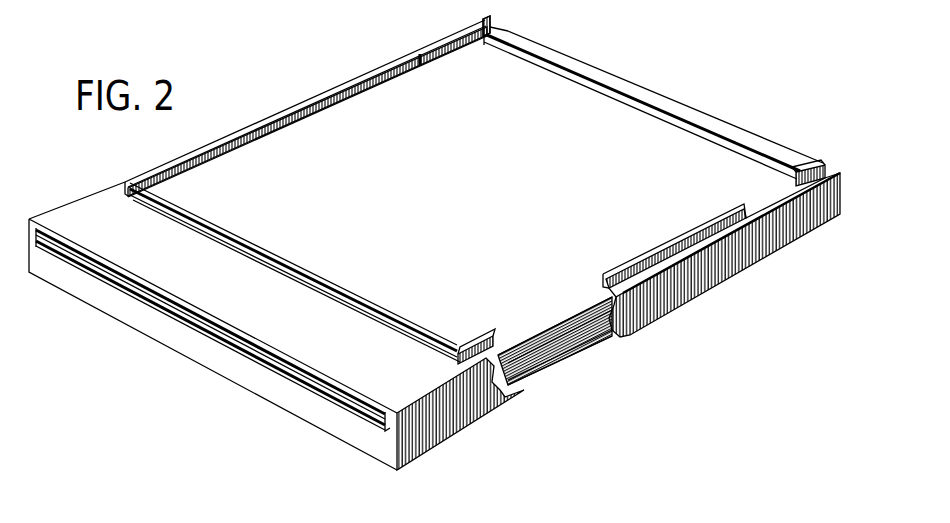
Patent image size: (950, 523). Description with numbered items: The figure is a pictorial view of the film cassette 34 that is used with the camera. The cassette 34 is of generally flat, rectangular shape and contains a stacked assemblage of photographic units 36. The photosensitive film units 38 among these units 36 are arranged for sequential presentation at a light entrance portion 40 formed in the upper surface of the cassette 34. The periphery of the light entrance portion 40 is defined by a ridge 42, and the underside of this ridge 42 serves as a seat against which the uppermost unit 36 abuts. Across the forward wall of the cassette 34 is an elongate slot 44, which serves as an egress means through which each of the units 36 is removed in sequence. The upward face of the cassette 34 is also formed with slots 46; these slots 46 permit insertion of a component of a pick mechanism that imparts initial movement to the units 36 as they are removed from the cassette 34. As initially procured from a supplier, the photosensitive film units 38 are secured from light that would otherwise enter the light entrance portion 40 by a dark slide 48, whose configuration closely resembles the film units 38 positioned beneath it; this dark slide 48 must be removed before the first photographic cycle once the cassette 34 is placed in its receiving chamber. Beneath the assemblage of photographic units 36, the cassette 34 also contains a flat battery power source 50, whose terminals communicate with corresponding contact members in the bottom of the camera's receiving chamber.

The cassette 34 is at (258, 113).
The photographic units 36 is at (603, 348).
The photosensitive film units 38 is at (563, 350).
The light entrance portion 40 is at (600, 110).
The ridge 42 is at (490, 364).
The elongate slot 44 is at (382, 413).
The slots 46 is at (475, 42).
The dark slide 48 is at (558, 321).
The battery power source 50 is at (543, 373).